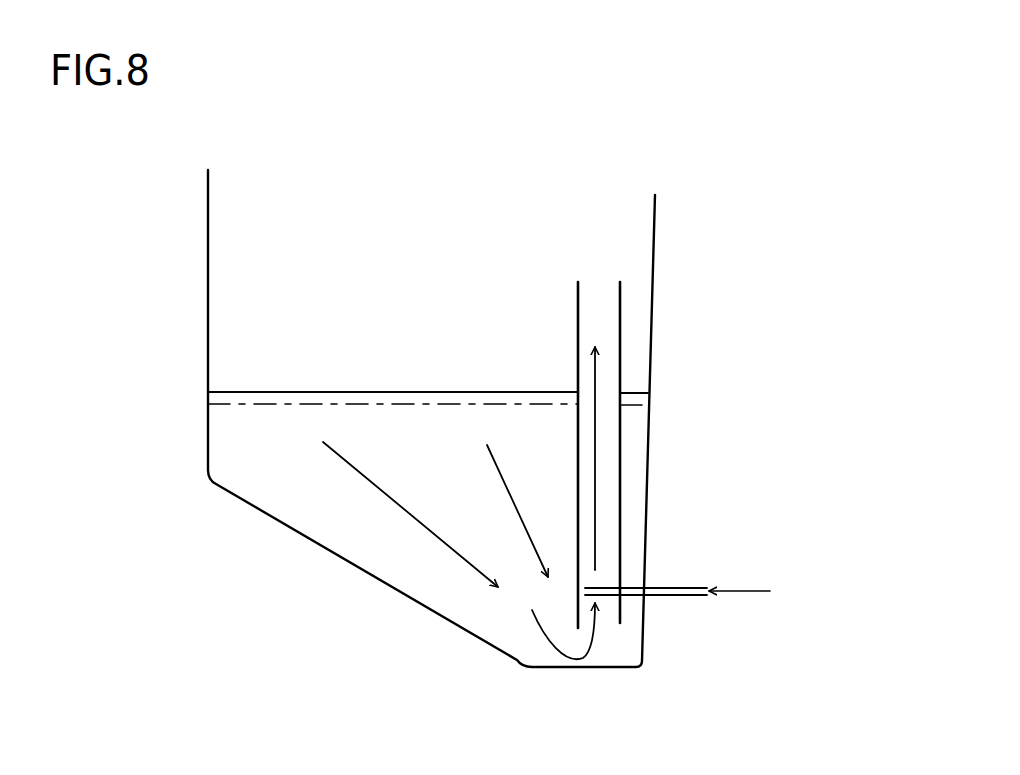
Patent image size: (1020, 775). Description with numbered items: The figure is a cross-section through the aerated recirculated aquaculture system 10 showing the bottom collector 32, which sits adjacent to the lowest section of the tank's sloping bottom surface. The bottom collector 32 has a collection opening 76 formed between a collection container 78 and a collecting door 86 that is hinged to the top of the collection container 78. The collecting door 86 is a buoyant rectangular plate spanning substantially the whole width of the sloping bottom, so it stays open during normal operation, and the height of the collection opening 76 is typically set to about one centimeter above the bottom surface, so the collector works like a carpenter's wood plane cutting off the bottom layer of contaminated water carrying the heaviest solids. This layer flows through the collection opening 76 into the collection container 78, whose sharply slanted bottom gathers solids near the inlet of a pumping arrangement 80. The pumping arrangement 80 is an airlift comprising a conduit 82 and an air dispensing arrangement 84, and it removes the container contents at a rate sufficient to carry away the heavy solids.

The aerated recirculated aquaculture system 10 is at (815, 256).
The bottom collector 32 is at (752, 374).
The collection opening 76 is at (242, 393).
The collection container 78 is at (215, 455).
The pumping arrangement 80 is at (617, 483).
The conduit 82 is at (617, 520).
The air dispensing arrangement 84 is at (613, 600).
The collecting door 86 is at (275, 392).